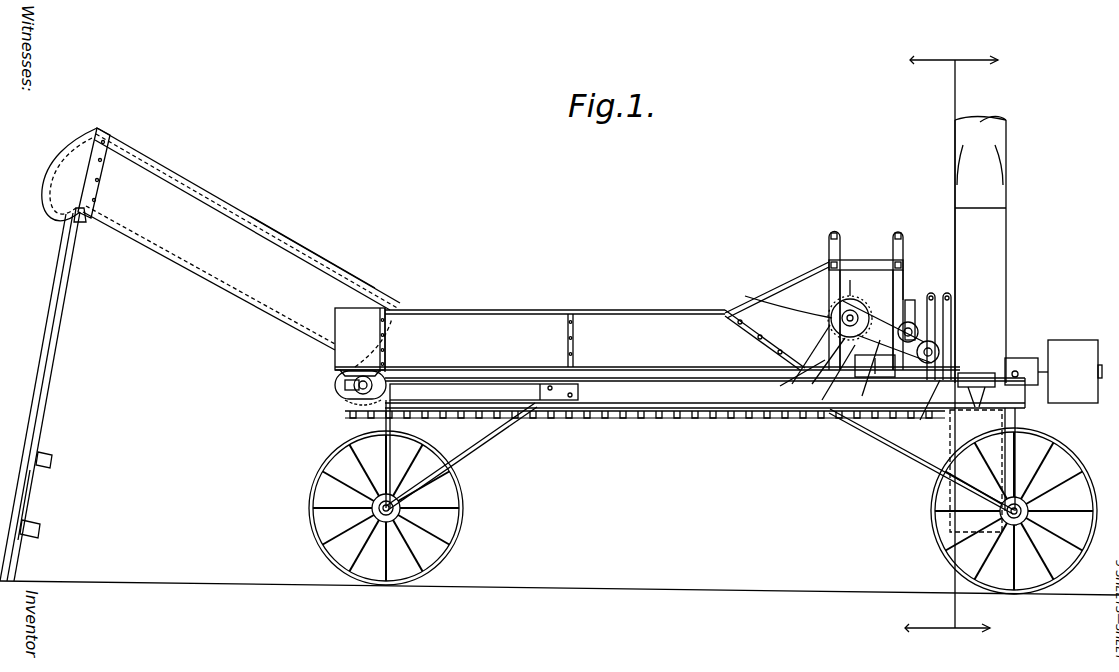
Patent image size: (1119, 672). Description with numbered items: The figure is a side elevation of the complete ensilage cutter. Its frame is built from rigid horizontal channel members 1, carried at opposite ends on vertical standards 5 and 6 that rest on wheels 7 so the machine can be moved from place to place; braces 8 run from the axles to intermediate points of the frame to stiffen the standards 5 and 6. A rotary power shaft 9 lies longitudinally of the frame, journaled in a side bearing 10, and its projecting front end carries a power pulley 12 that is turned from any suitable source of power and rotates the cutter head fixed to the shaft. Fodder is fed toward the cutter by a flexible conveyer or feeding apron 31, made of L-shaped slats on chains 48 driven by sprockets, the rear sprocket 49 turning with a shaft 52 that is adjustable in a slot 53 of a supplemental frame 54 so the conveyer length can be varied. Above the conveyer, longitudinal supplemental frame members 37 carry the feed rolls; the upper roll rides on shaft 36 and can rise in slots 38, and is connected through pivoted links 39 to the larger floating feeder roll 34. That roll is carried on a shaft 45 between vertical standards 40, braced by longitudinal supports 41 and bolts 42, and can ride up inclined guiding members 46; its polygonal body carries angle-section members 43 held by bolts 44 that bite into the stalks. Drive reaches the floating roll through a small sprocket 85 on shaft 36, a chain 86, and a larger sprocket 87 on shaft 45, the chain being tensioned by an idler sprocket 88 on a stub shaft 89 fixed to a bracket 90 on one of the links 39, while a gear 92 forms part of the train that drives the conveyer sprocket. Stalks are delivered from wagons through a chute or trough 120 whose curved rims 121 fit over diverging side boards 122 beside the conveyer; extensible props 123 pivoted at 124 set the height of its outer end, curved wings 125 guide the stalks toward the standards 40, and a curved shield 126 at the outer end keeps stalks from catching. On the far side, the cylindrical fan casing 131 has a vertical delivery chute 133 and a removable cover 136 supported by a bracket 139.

The horizontal frame members 1 is at (652, 395).
The vertical standard 5 is at (1020, 430).
The vertical standard 6 is at (391, 432).
The wheels 7 is at (324, 464).
The braces 8 is at (483, 444).
The rotary power shaft 9 is at (1042, 368).
The side bearing 10 is at (1017, 360).
The power pulley 12 is at (1092, 404).
The feeding apron 31 is at (746, 420).
The floating feeder roll 34 is at (855, 298).
The shaft 36 is at (928, 440).
The supplemental frame members 37 is at (822, 402).
The slots 38 is at (932, 300).
The pivoted links 39 is at (862, 397).
The vertical standards 40 is at (895, 262).
The longitudinal supports 41 is at (878, 266).
The bolts 42 is at (836, 233).
The angle members 43 is at (845, 298).
The bolts 44 is at (905, 300).
The floating feeder shaft 45 is at (792, 385).
The guiding members 46 is at (912, 318).
The chains 48 is at (700, 421).
The sprocket 49 is at (345, 393).
The shaft 52 is at (345, 375).
The slot 53 is at (343, 388).
The supplemental frame 54 is at (530, 402).
The small sprocket 85 is at (940, 355).
The chain 86 is at (812, 385).
The larger sprocket 87 is at (773, 300).
The idler sprocket 88 is at (918, 328).
The stub shaft 89 is at (918, 334).
The bracket 90 is at (879, 381).
The gear 92 is at (920, 430).
The chute 120 is at (252, 216).
The curved rims 121 is at (355, 282).
The side boards 122 is at (478, 320).
The extensible props 123 is at (45, 352).
The pivot connection 124 is at (88, 222).
The curved wings 125 is at (775, 295).
The curved shield 126 is at (46, 196).
The casing 131 is at (1007, 266).
The chute 133 is at (1008, 146).
The removable cover 136 is at (1008, 228).
The supporting bracket 139 is at (985, 372).